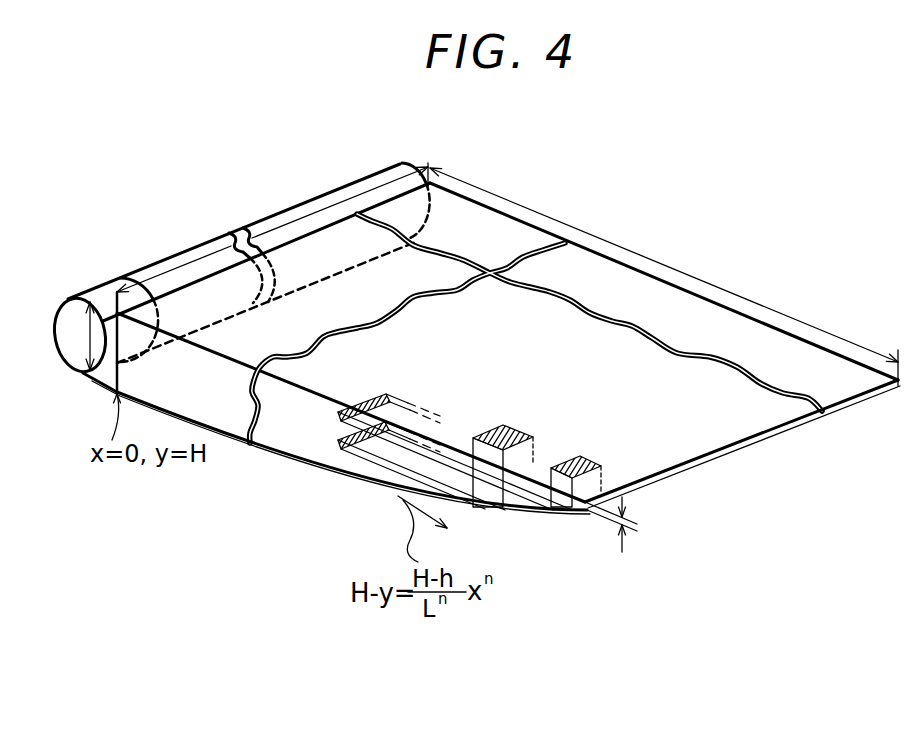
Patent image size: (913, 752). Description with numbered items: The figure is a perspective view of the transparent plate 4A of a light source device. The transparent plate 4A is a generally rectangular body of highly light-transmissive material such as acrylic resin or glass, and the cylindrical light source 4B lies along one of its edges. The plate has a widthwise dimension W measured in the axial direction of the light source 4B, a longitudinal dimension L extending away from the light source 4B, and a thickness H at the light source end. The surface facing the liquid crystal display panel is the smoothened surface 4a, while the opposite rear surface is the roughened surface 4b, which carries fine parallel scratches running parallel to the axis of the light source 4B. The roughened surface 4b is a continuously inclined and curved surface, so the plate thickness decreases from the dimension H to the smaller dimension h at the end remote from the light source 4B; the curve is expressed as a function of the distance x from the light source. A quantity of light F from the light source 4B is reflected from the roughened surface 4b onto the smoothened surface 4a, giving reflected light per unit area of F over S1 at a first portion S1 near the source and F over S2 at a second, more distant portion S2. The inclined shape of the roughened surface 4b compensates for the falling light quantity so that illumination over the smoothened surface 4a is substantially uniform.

The transparent plate 4A is at (703, 440).
The light source 4B is at (181, 260).
The smoothened surface 4a is at (762, 432).
The roughened surface 4b is at (527, 511).
The first portion area S1 is at (512, 432).
The second portion area S2 is at (583, 463).
The quantity of light F is at (338, 416).
The widthwise dimension W is at (304, 218).
The longitudinal dimension L is at (664, 277).
The thickness H is at (80, 336).
The reduced thickness h is at (623, 524).
The distance from the light source x is at (393, 500).